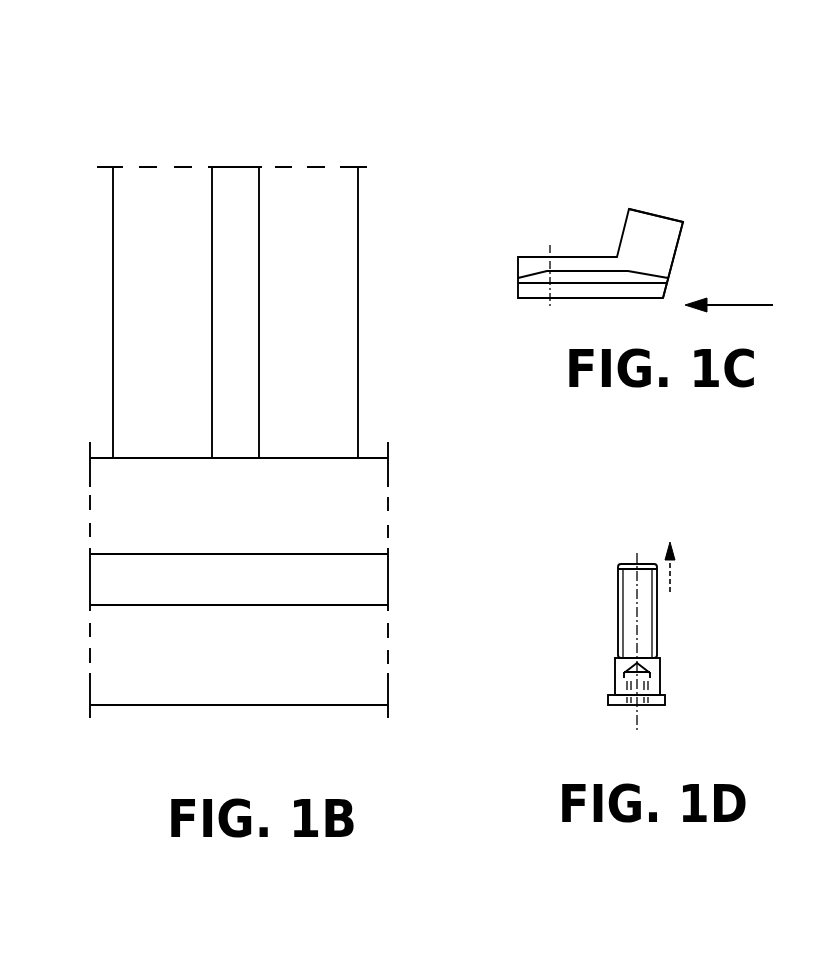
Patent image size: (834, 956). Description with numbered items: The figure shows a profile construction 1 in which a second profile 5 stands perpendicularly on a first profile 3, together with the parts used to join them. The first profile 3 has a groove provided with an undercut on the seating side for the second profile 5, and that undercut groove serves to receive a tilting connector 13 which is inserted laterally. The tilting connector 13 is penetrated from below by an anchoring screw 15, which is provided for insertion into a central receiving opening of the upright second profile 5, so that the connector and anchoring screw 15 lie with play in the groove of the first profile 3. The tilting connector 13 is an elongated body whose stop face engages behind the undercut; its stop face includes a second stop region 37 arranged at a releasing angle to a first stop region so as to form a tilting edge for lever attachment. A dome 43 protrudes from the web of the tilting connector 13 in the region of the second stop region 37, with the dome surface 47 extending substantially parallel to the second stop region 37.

In FIG. 1B, the profile construction 1 is at (434, 122).
In FIG. 1B, the first profile 3 is at (130, 505).
In FIG. 1B, the second profile 5 is at (130, 294).
In FIG. 1C, the tilting connector 13 is at (716, 227).
In FIG. 1C, the second stop region 37 is at (648, 271).
In FIG. 1C, the dome 43 is at (617, 236).
In FIG. 1C, the dome surface 47 is at (650, 232).
In FIG. 1D, the anchoring screw 15 is at (658, 640).